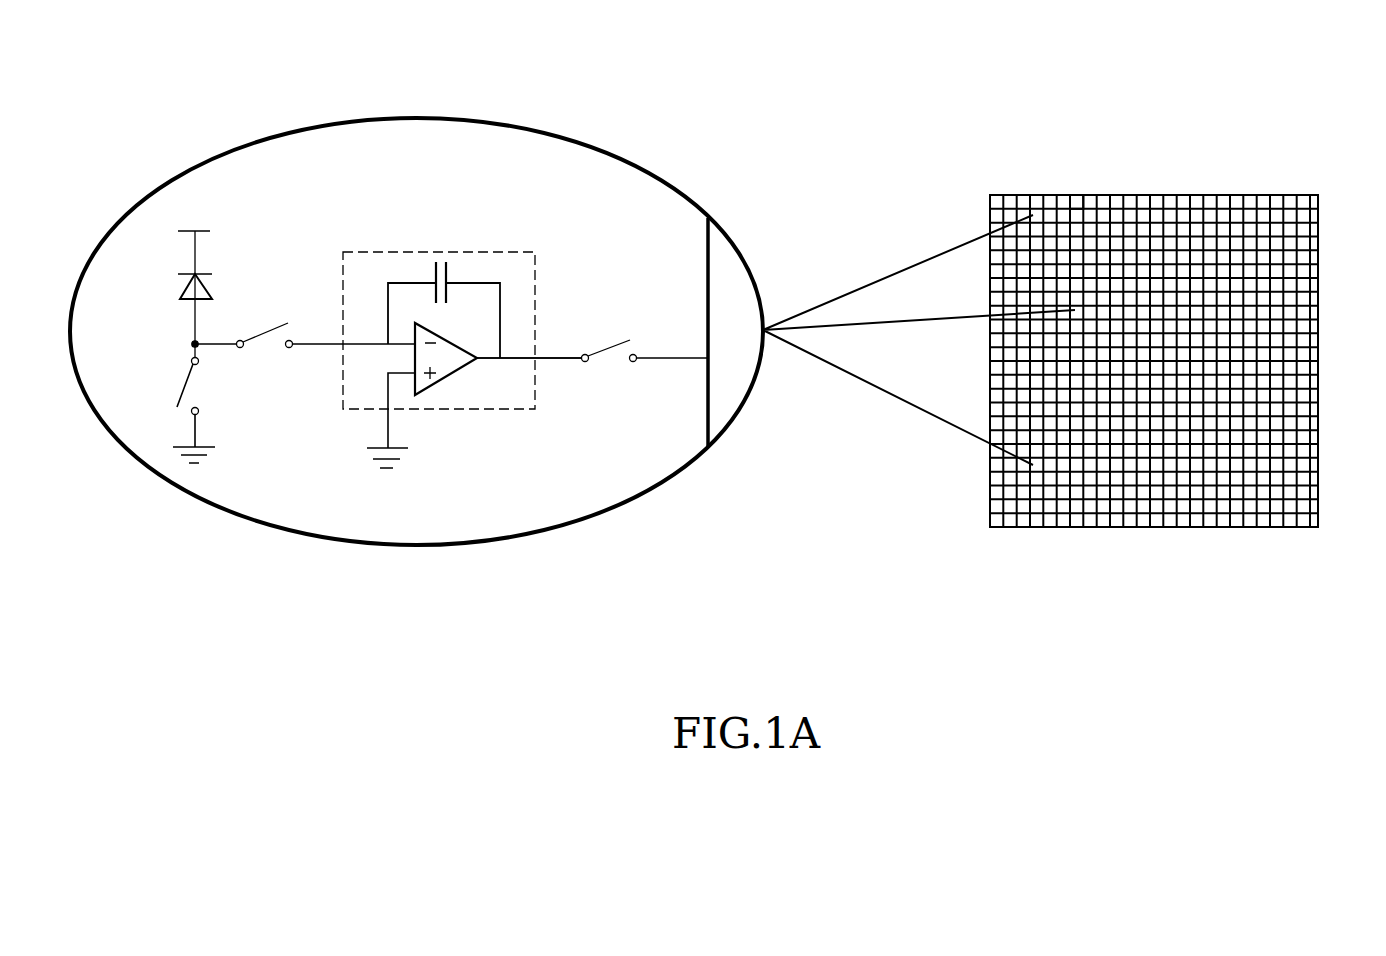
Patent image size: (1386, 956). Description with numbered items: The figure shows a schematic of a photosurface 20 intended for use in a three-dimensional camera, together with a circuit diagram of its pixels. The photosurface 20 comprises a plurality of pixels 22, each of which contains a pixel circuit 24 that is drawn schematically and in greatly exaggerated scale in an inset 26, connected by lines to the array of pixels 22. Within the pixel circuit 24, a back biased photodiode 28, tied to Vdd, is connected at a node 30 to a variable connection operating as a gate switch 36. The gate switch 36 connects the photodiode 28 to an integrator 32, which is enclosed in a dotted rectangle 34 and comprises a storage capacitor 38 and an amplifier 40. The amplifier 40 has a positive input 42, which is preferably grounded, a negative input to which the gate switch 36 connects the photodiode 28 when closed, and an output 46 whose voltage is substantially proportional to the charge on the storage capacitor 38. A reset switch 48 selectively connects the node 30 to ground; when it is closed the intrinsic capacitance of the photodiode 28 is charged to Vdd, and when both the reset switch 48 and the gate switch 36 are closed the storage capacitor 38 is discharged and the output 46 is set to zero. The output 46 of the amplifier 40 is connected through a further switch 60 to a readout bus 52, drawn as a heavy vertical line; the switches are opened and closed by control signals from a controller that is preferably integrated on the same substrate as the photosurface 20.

The photosurface 20 is at (1255, 146).
The pixels 22 is at (1247, 257).
The pixel circuit 24 is at (434, 168).
The inset 26 is at (643, 157).
The back biased photodiode 28 is at (183, 297).
The node 30 is at (198, 348).
The integrator 32 is at (459, 258).
The dotted rectangle 34 is at (493, 243).
The gate switch 36 is at (259, 327).
The storage capacitor 38 is at (435, 263).
The amplifier 40 is at (443, 362).
The positive input 42 is at (412, 373).
The output 46 is at (477, 363).
The reset switch 48 is at (187, 387).
The readout bus 52 is at (707, 285).
The readout switch 60 is at (613, 352).